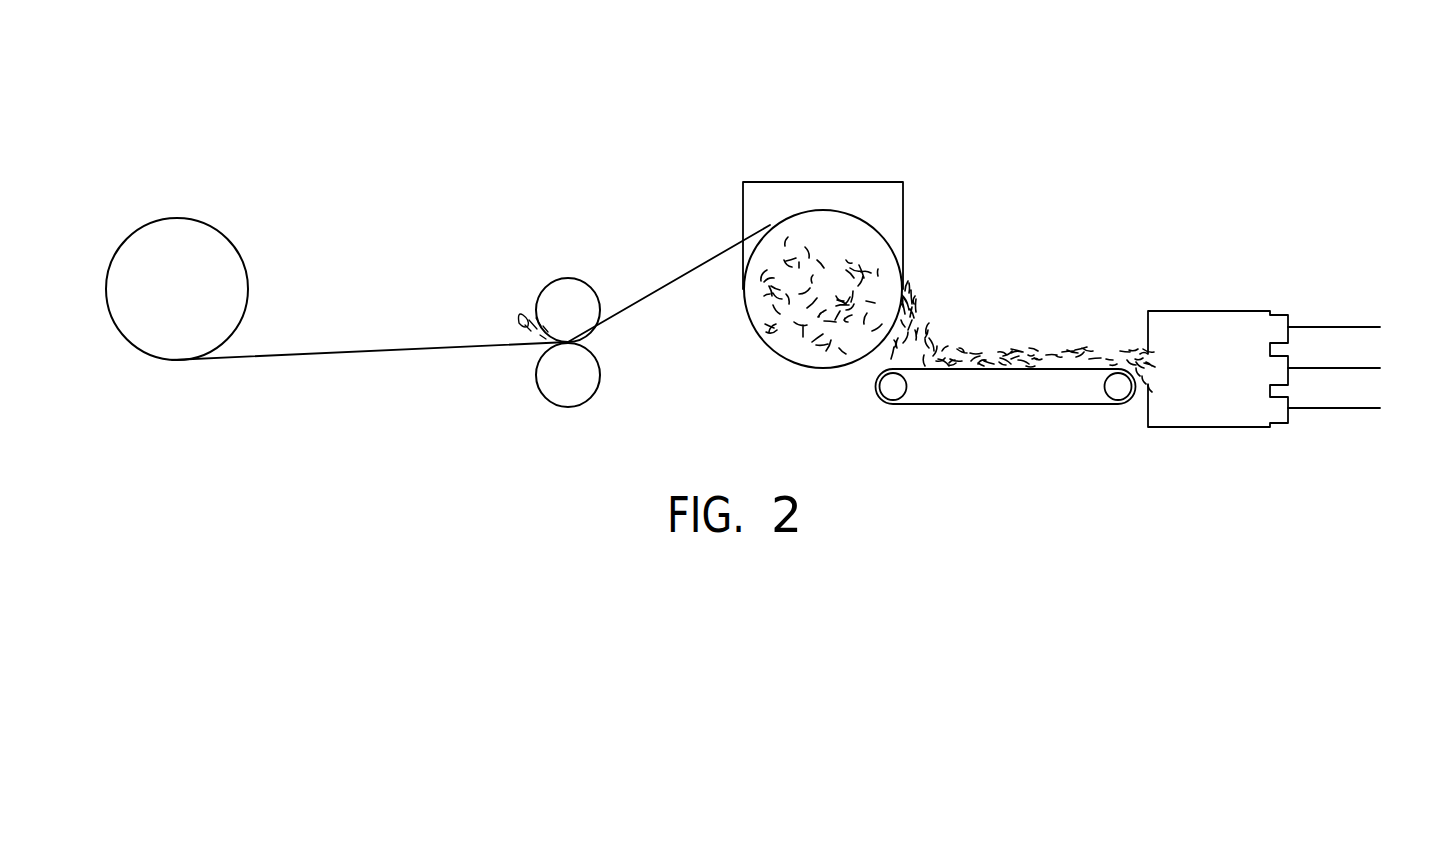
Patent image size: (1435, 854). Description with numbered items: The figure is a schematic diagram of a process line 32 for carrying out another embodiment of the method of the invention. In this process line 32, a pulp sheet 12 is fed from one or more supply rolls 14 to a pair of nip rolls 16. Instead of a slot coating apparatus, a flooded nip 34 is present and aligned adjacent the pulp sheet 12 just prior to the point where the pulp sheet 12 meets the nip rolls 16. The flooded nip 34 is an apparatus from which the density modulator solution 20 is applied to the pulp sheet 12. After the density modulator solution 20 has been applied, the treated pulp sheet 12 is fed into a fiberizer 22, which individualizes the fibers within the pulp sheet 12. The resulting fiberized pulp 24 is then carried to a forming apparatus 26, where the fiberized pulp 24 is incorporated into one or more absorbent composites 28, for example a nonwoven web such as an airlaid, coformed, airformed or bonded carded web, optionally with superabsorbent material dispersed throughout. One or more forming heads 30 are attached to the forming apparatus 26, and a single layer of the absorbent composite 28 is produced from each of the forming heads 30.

The pulp sheet 12 is at (310, 352).
The supply roll 14 is at (228, 234).
The nip rolls 16 is at (578, 279).
The density modulator solution 20 is at (530, 356).
The fiberizer 22 is at (890, 212).
The fiberized pulp 24 is at (940, 318).
The forming apparatus 26 is at (1180, 330).
The absorbent composite 28 is at (1343, 327).
The forming head 30 is at (1293, 300).
The process line 32 is at (875, 95).
The flooded nip 34 is at (517, 313).